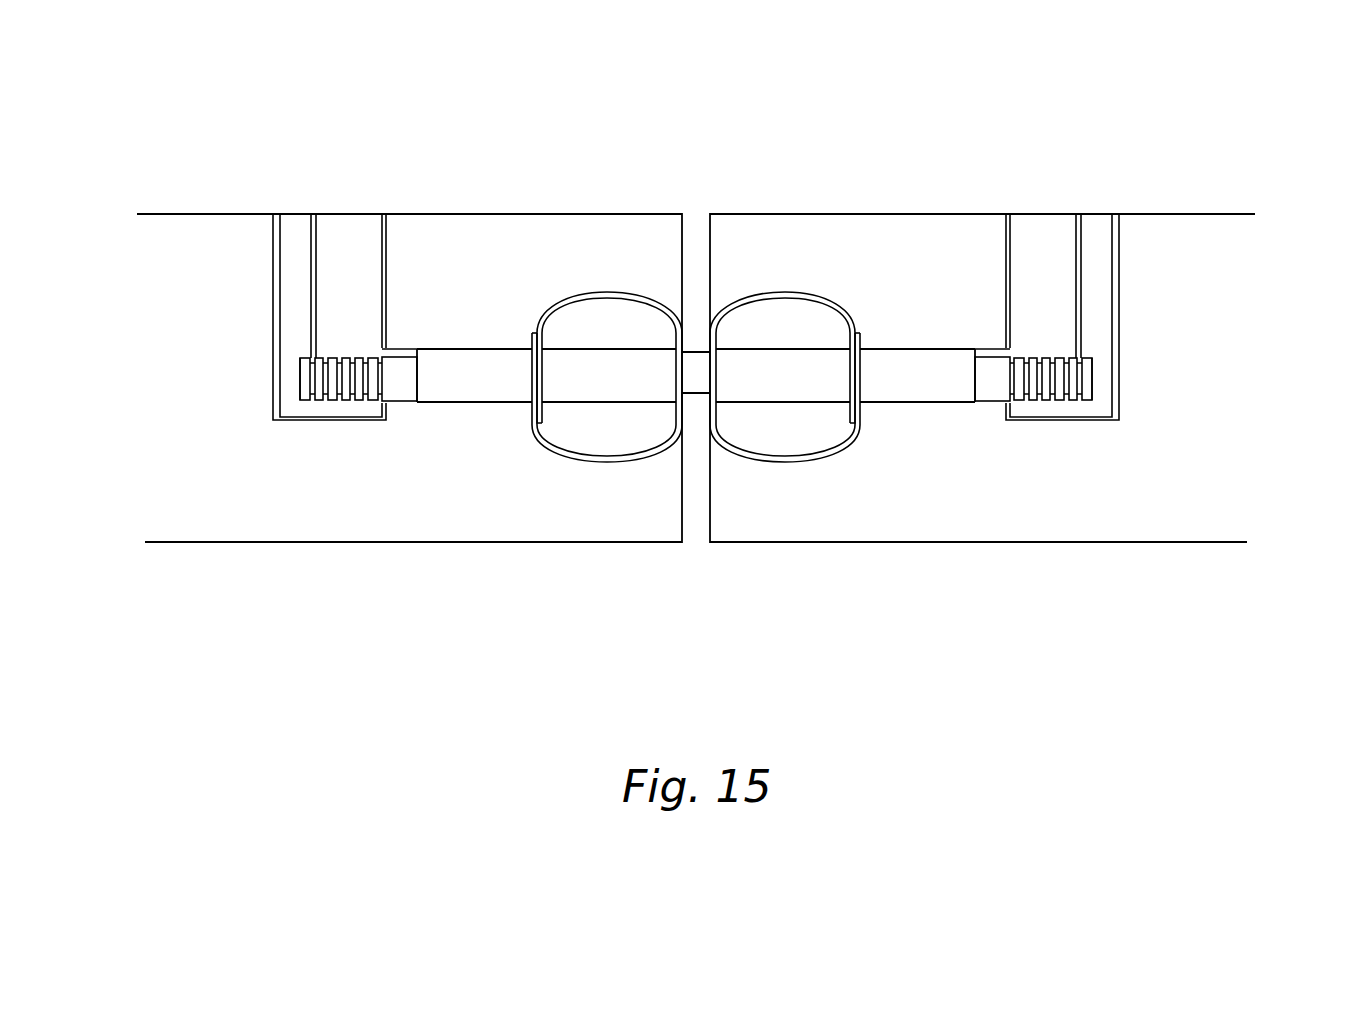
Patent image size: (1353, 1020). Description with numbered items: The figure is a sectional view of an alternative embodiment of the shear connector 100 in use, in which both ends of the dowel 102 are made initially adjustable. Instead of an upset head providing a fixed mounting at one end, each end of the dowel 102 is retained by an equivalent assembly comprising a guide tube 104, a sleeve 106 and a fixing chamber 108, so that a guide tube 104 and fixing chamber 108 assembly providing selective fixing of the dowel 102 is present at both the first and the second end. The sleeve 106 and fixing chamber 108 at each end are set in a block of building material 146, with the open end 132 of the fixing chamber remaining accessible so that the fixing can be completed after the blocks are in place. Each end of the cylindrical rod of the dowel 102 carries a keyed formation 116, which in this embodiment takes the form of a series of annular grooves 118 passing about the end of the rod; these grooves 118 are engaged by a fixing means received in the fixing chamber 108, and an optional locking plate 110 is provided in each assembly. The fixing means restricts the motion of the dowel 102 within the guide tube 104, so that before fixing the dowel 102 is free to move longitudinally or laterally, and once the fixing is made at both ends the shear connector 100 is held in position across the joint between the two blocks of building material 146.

The shear connector 100 is at (698, 395).
The dowel 102 is at (393, 385).
The guide tube 104 is at (507, 373).
The sleeve 106 is at (472, 403).
The fixing chamber 108 is at (272, 307).
The locking plate 110 is at (316, 306).
The keyed formation 116 is at (300, 382).
The annular grooves 118 is at (340, 397).
The open end 132 is at (335, 233).
The second block of building material 146 is at (628, 243).